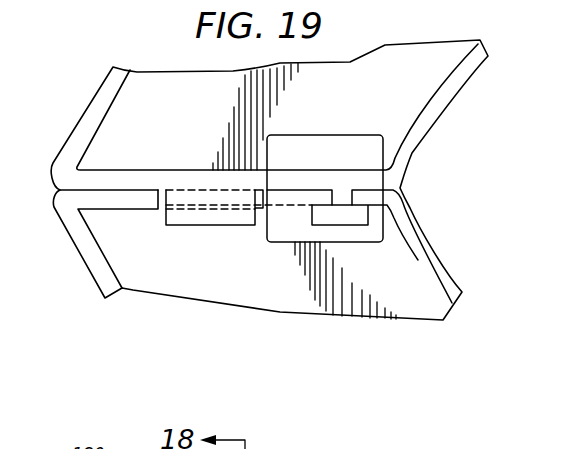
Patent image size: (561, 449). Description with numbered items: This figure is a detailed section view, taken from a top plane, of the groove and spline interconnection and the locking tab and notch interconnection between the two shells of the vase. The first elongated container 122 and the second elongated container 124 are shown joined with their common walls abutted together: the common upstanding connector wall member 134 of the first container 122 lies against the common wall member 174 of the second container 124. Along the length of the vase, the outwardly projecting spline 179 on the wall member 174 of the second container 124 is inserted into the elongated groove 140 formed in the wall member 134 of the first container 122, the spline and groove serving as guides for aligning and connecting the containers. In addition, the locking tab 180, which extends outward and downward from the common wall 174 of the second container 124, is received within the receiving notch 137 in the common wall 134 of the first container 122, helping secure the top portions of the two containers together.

The first elongated container 122 is at (389, 337).
The second elongated container 124 is at (73, 68).
The common upstanding connector wall member 134 is at (106, 205).
The receiving notch 137 is at (200, 198).
The elongated groove 140 is at (352, 218).
The common wall member 174 is at (106, 205).
The spline 179 is at (343, 197).
The locking tab 180 is at (192, 217).